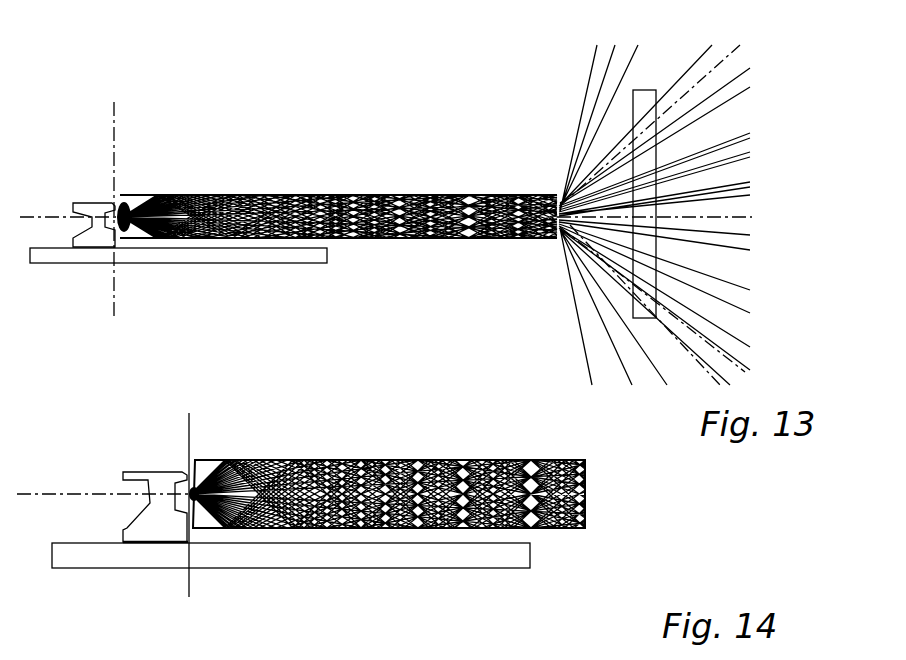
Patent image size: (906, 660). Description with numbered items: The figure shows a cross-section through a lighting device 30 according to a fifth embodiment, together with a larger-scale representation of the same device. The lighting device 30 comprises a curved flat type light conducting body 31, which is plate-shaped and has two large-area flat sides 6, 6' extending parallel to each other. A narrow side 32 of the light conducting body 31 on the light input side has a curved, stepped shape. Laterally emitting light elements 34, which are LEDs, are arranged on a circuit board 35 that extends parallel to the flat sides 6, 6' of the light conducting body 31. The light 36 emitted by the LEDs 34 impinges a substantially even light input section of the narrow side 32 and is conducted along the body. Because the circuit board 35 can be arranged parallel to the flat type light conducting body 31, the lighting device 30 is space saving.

In FIG. 13, the lighting device 30 is at (406, 90).
In FIG. 14, the lighting device 30 is at (398, 431).
In FIG. 13, the curved flat type light conducting body 31 is at (490, 195).
In FIG. 14, the curved flat type light conducting body 31 is at (503, 462).
In FIG. 14, the narrow side on the light input side 32 is at (193, 484).
In FIG. 13, the laterally emitting light element 34 is at (98, 205).
In FIG. 14, the laterally emitting light element 34 is at (162, 477).
In FIG. 13, the circuit board 35 is at (225, 253).
In FIG. 14, the circuit board 35 is at (326, 563).
In FIG. 13, the light 36 is at (692, 97).
In FIG. 14, the flat side 6 is at (390, 429).
In FIG. 14, the flat side 6' is at (389, 538).